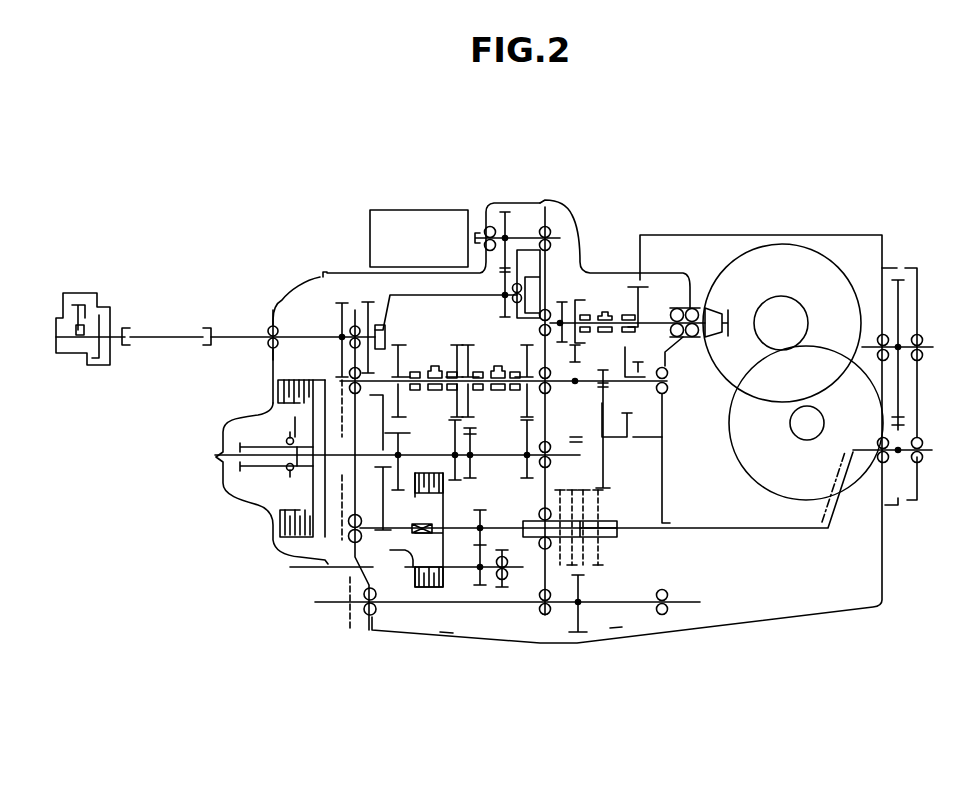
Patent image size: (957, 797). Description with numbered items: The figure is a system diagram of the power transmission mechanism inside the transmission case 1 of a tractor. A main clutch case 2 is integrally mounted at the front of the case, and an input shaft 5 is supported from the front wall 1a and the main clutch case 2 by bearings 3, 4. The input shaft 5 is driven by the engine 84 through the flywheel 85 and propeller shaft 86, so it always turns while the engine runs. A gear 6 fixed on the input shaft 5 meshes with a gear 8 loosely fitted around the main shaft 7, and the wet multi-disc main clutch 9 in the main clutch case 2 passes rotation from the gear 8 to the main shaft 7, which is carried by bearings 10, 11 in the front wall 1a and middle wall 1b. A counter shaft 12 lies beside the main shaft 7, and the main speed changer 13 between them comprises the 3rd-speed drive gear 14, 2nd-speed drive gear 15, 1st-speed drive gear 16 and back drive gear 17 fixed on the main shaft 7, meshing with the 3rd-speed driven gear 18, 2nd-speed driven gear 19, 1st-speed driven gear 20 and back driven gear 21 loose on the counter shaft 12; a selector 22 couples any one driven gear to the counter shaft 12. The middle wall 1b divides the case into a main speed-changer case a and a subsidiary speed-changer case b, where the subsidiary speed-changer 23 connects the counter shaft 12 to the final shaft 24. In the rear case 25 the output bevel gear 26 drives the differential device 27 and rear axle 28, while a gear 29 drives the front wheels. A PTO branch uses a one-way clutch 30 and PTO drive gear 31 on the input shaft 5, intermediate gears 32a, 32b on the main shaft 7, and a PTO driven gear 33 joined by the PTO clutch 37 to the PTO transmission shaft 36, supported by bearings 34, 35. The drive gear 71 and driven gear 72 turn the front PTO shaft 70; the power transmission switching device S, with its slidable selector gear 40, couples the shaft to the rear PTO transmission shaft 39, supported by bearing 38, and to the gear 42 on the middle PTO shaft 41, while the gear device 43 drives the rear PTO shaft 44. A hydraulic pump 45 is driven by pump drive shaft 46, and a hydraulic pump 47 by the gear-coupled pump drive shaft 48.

The transmission case 1 is at (489, 641).
The front wall 1a is at (330, 272).
The middle wall 1b is at (540, 258).
The main clutch case 2 is at (283, 562).
The bearing 3 is at (320, 282).
The bearing 4 is at (268, 328).
The input shaft 5 is at (308, 337).
The gear 6 is at (320, 347).
The main shaft 7 is at (433, 455).
The gear 8 is at (340, 379).
The main clutch 9 is at (236, 490).
The bearing 10 is at (330, 466).
The bearing 11 is at (550, 450).
The counter shaft 12 is at (573, 381).
The main speed changer 13 is at (458, 300).
The 3rd-speed drive gear 14 is at (398, 430).
The 2nd-speed drive gear 15 is at (452, 430).
The 1st-speed drive gear 16 is at (478, 438).
The back drive gear 17 is at (520, 432).
The 3rd-speed driven gear 18 is at (404, 350).
The 2nd-speed driven gear 19 is at (457, 350).
The 1st-speed driven gear 20 is at (470, 345).
The back driven gear 21 is at (520, 350).
The selector 22 is at (434, 370).
The subsidiary speed-changer 23 is at (602, 302).
The final shaft 24 is at (670, 310).
The rear case 25 is at (698, 235).
The output bevel gear 26 is at (712, 340).
The differential device 27 is at (823, 255).
The rear axle 28 is at (802, 425).
The gear 29 is at (564, 312).
The one-way clutch 30 is at (380, 322).
The PTO drive gear 31 is at (362, 318).
The intermediate gear 32a is at (300, 432).
The intermediate gear 32b is at (340, 468).
The PTO driven gear 33 is at (386, 497).
The bearing 34 is at (352, 545).
The bearing 35 is at (540, 516).
The PTO transmission shaft 36 is at (462, 527).
The PTO clutch 37 is at (406, 586).
The bearing 38 is at (906, 478).
The rear PTO transmission shaft 39 is at (712, 527).
The selector gear 40 is at (570, 505).
The middle PTO shaft 41 is at (517, 604).
The gear 42 is at (581, 587).
The gear device 43 is at (906, 420).
The rear PTO shaft 44 is at (922, 340).
The hydraulic pump 45 is at (551, 310).
The pump drive shaft 46 is at (425, 295).
The hydraulic pump 47 is at (430, 210).
The pump drive shaft 48 is at (521, 233).
The front PTO shaft 70 is at (470, 568).
The drive gear 71 is at (482, 510).
The driven gear 72 is at (478, 560).
The engine 84 is at (85, 294).
The flywheel 85 is at (102, 360).
The propeller shaft 86 is at (160, 330).
The power transmission switching device S is at (610, 515).
The main speed-changer case a is at (452, 631).
The subsidiary speed-changer case b is at (616, 632).